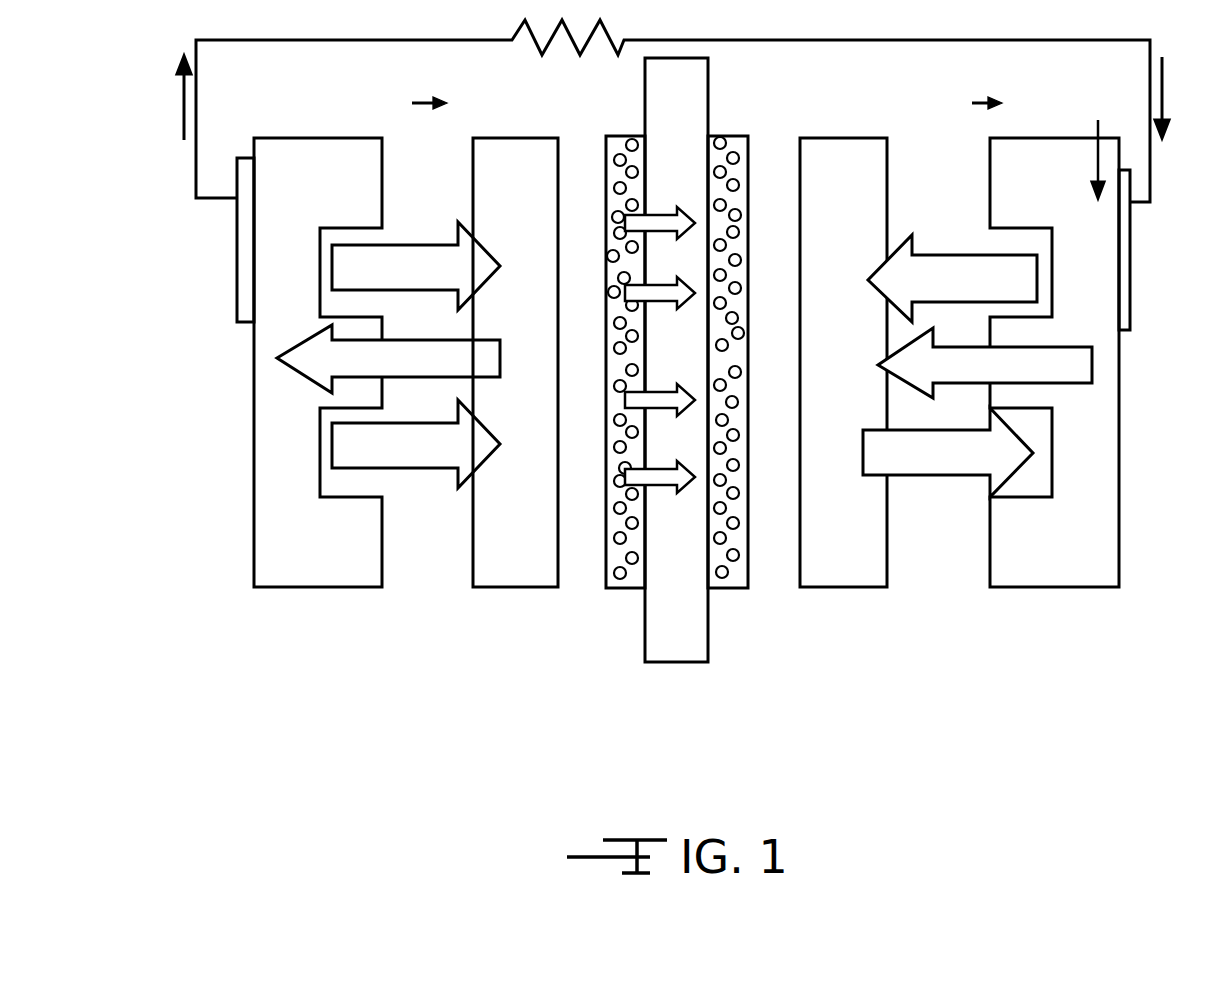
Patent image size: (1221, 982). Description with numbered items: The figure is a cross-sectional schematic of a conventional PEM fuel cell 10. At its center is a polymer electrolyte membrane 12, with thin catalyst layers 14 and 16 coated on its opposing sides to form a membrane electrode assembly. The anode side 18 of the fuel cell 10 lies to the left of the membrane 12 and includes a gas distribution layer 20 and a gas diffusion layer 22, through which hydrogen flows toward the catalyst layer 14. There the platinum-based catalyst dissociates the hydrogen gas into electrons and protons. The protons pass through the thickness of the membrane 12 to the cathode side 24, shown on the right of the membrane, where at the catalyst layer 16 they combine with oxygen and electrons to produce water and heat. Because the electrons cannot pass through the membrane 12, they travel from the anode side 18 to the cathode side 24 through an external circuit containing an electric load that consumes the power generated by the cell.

The fuel cell 10 is at (178, 477).
The polymer electrolyte membrane 12 is at (658, 616).
The catalyst layer 14 is at (616, 558).
The catalyst layer 16 is at (743, 580).
The anode side 18 is at (640, 690).
The gas distribution layer 20 is at (283, 335).
The gas diffusion layer 22 is at (503, 553).
The cathode side 24 is at (718, 690).